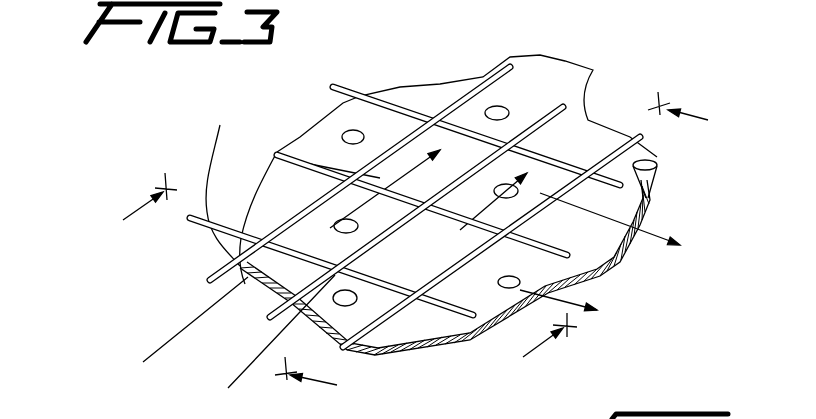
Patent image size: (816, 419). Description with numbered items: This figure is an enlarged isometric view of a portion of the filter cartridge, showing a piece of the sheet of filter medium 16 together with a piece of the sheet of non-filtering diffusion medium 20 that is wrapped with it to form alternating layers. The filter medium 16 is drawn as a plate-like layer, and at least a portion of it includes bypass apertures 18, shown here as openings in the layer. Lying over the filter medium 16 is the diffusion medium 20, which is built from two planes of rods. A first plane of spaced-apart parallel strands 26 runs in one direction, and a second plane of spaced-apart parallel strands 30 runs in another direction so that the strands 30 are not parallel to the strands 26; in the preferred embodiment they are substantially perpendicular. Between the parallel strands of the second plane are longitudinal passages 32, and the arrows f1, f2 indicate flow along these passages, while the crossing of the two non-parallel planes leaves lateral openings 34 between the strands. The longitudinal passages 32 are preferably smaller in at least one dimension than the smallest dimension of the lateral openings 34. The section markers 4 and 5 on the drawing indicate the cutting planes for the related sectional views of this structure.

The filter medium 16 is at (666, 172).
The bypass apertures 18 is at (650, 200).
The non-filtering diffusion medium 20 is at (467, 74).
The strands of the first plane 26 is at (575, 63).
The strands of the second plane 30 is at (277, 150).
The longitudinal passages 32 is at (478, 288).
The lateral openings 34 is at (380, 178).
The section line 4- 4 is at (350, 270).
The section line 5- 5 is at (491, 248).
The flow arrow f1 is at (253, 367).
The flow arrow f2 is at (600, 283).